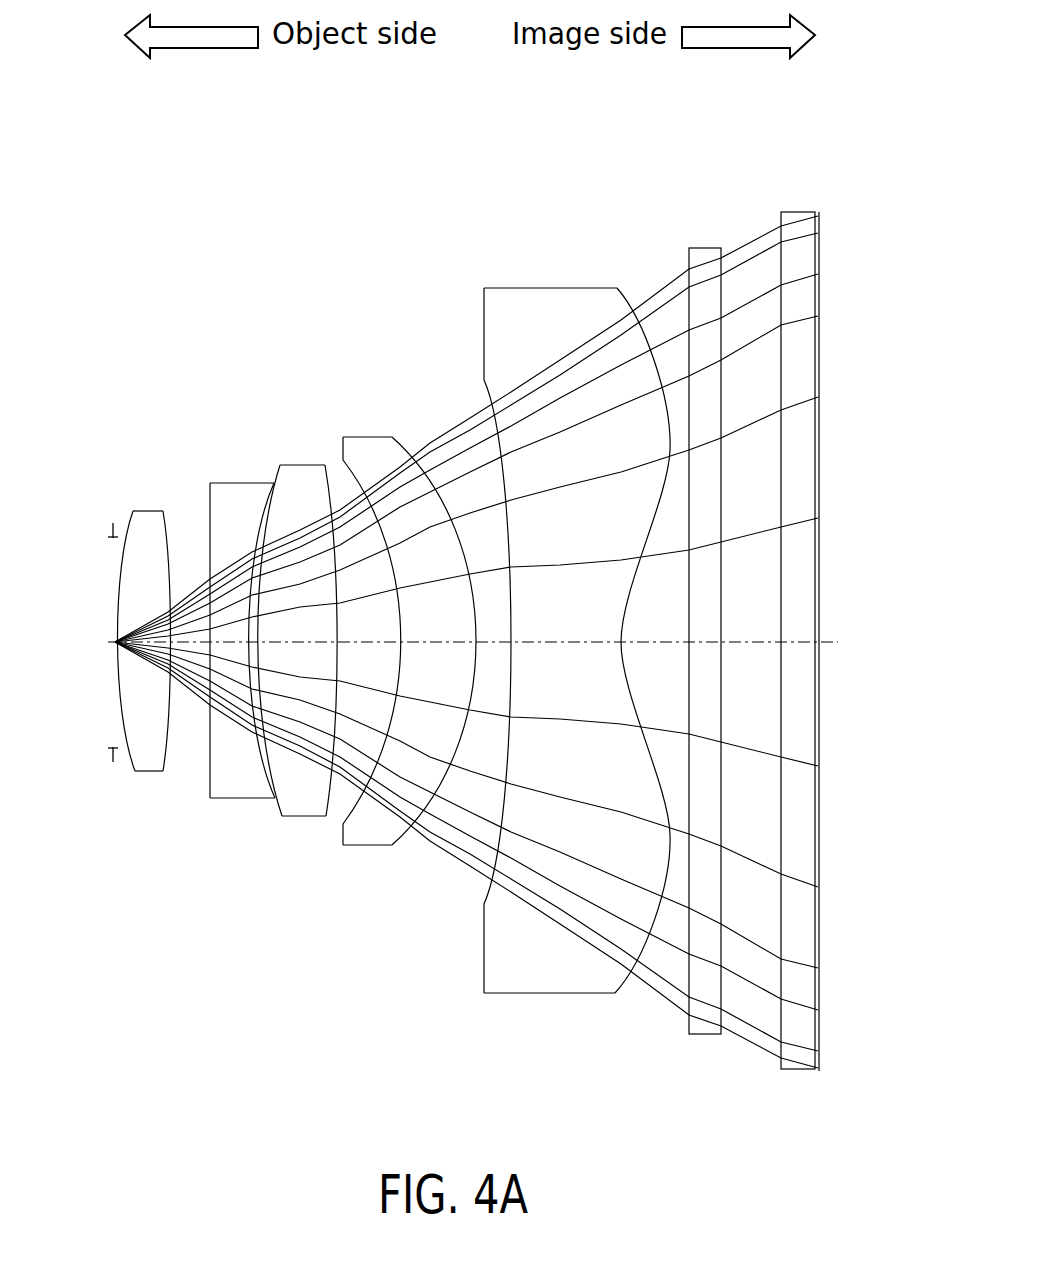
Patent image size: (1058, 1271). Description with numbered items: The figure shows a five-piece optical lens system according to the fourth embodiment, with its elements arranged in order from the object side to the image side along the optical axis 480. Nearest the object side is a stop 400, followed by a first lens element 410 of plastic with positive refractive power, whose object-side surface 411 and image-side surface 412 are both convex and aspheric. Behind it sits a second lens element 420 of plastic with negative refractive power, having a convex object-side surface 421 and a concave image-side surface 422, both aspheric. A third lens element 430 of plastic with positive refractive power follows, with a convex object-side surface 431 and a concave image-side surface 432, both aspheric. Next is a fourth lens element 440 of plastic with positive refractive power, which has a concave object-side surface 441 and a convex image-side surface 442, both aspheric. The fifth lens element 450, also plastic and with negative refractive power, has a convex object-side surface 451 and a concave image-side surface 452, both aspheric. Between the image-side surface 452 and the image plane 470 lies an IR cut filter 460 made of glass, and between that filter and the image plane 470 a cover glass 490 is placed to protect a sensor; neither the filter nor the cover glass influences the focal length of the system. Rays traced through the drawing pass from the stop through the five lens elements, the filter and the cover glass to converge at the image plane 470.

The stop 400 is at (102, 520).
The first lens element 410 is at (121, 621).
The object-side surface of the first lens element 411 is at (120, 710).
The image-side surface of the first lens element 412 is at (168, 727).
The second lens element 420 is at (228, 635).
The object-side surface of the second lens element 421 is at (210, 758).
The image-side surface of the second lens element 422 is at (263, 766).
The third lens element 430 is at (293, 651).
The object-side surface of the third lens element 431 is at (270, 755).
The image-side surface of the third lens element 432 is at (327, 797).
The fourth lens element 440 is at (397, 637).
The object-side surface of the fourth lens element 441 is at (355, 800).
The image-side surface of the fourth lens element 442 is at (398, 827).
The fifth lens element 450 is at (555, 631).
The object-side surface of the fifth lens element 451 is at (517, 808).
The image-side surface of the fifth lens element 452 is at (657, 953).
The IR cut filter 460 is at (697, 230).
The image plane 470 is at (829, 235).
The optical axis 480 is at (835, 641).
The cover glass 490 is at (788, 194).